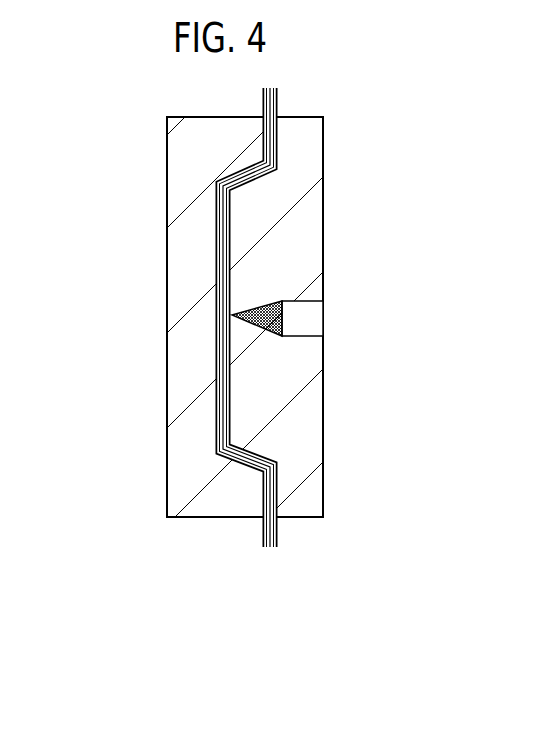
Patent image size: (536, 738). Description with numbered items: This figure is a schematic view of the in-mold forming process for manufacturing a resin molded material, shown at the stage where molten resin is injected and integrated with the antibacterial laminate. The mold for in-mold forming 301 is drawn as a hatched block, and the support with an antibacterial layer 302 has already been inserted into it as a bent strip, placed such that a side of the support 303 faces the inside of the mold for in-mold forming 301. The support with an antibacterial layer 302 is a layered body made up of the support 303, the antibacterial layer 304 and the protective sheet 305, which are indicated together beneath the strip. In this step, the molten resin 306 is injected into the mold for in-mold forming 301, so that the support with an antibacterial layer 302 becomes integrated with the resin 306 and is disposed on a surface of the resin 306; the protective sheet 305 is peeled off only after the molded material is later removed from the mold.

The mold for in-mold forming 301 is at (187, 447).
The support with antibacterial layer 302 is at (269, 383).
The support 303 is at (279, 530).
The antibacterial layer 304 is at (269, 547).
The protective sheet 305 is at (229, 360).
The resin 306 is at (253, 187).